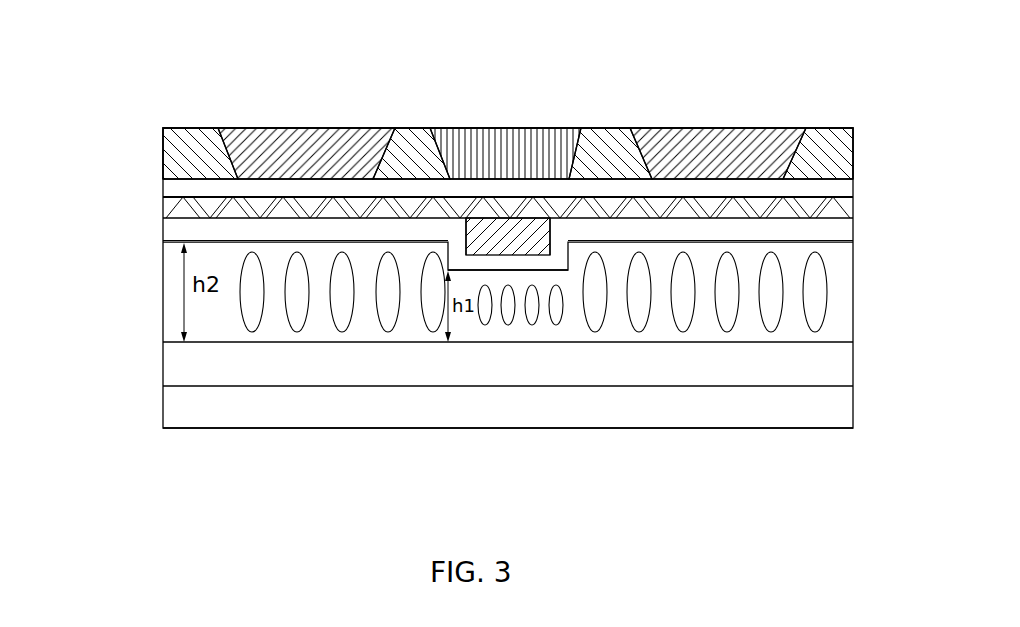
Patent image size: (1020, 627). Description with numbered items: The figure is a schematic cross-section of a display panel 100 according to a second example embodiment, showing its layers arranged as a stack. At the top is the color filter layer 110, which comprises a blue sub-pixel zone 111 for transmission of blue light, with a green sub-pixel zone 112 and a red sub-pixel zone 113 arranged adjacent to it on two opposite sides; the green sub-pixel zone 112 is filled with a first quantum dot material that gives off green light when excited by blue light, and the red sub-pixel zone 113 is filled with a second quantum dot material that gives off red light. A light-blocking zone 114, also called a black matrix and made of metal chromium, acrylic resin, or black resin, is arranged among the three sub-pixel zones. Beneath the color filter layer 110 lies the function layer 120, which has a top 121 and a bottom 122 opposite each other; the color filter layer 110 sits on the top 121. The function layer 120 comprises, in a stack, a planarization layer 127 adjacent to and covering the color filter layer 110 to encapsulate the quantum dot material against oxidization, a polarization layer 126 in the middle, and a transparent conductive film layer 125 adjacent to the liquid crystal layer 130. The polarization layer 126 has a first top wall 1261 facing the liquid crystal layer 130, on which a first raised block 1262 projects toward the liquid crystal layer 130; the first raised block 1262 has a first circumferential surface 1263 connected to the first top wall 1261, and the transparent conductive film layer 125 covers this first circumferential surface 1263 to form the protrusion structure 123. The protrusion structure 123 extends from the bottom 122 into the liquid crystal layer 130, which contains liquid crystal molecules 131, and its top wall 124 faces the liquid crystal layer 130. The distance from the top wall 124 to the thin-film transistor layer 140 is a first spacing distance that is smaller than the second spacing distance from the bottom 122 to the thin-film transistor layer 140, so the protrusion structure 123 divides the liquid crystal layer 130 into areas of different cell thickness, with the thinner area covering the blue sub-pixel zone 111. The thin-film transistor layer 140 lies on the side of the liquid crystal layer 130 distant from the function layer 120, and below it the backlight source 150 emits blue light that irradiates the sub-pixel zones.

The display panel 100 is at (122, 78).
The color filter layer 110 is at (187, 165).
The blue sub-pixel zone 111 is at (437, 132).
The green sub-pixel zone 112 is at (313, 147).
The red sub-pixel zone 113 is at (780, 130).
The light-blocking zone 114 is at (410, 143).
The function layer 120 is at (157, 242).
The top 121 is at (834, 173).
The bottom 122 is at (832, 251).
The protrusion structure 123 is at (548, 262).
The top wall 124 is at (472, 285).
The transparent conductive film layer 125 is at (828, 223).
The polarization layer 126 is at (820, 200).
The first top wall 1261 is at (603, 203).
The first raised block 1262 is at (488, 230).
The first circumferential surface 1263 is at (503, 237).
The planarization layer 127 is at (828, 185).
The liquid crystal layer 130 is at (170, 292).
The liquid crystal molecules 131 is at (808, 290).
The thin-film transistor layer 140 is at (188, 373).
The backlight source 150 is at (188, 413).